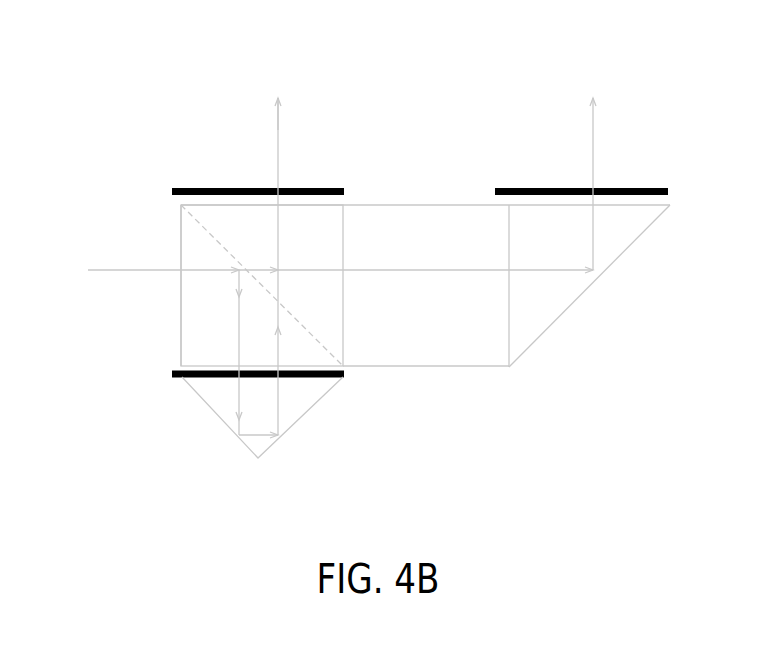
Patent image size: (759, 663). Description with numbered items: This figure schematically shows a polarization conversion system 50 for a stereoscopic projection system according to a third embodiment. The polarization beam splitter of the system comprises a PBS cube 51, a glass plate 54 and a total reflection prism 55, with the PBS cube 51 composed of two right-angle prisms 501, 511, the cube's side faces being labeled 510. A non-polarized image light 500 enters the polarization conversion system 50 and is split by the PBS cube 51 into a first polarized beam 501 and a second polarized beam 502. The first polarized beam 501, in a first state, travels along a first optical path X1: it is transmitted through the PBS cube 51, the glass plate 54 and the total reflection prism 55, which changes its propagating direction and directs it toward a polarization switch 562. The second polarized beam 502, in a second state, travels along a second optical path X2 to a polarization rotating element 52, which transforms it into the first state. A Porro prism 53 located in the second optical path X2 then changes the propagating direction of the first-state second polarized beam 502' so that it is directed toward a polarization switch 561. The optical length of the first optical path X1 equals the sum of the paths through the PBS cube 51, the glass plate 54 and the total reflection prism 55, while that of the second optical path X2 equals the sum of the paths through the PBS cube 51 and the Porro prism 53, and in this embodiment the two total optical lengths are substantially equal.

The polarization conversion system 50 is at (704, 42).
The PBS cube 51 is at (176, 207).
The side surface of beam splitter 510 is at (190, 242).
The right-angle prism 511 is at (303, 223).
The polarization switch 561 is at (210, 188).
The polarization switch 562 is at (532, 188).
The polarization rotating element 52 is at (345, 374).
The Porro prism 53 is at (297, 405).
The glass plate 54 is at (483, 355).
The total reflection prism 55 is at (515, 333).
The first polarized beam 501 is at (512, 272).
The non-polarized image light 500 is at (201, 271).
The second polarized beam 502 is at (224, 369).
The first-state second polarized beam 502' is at (241, 307).
The first optical path X1 is at (593, 247).
The second optical path X2 is at (238, 332).